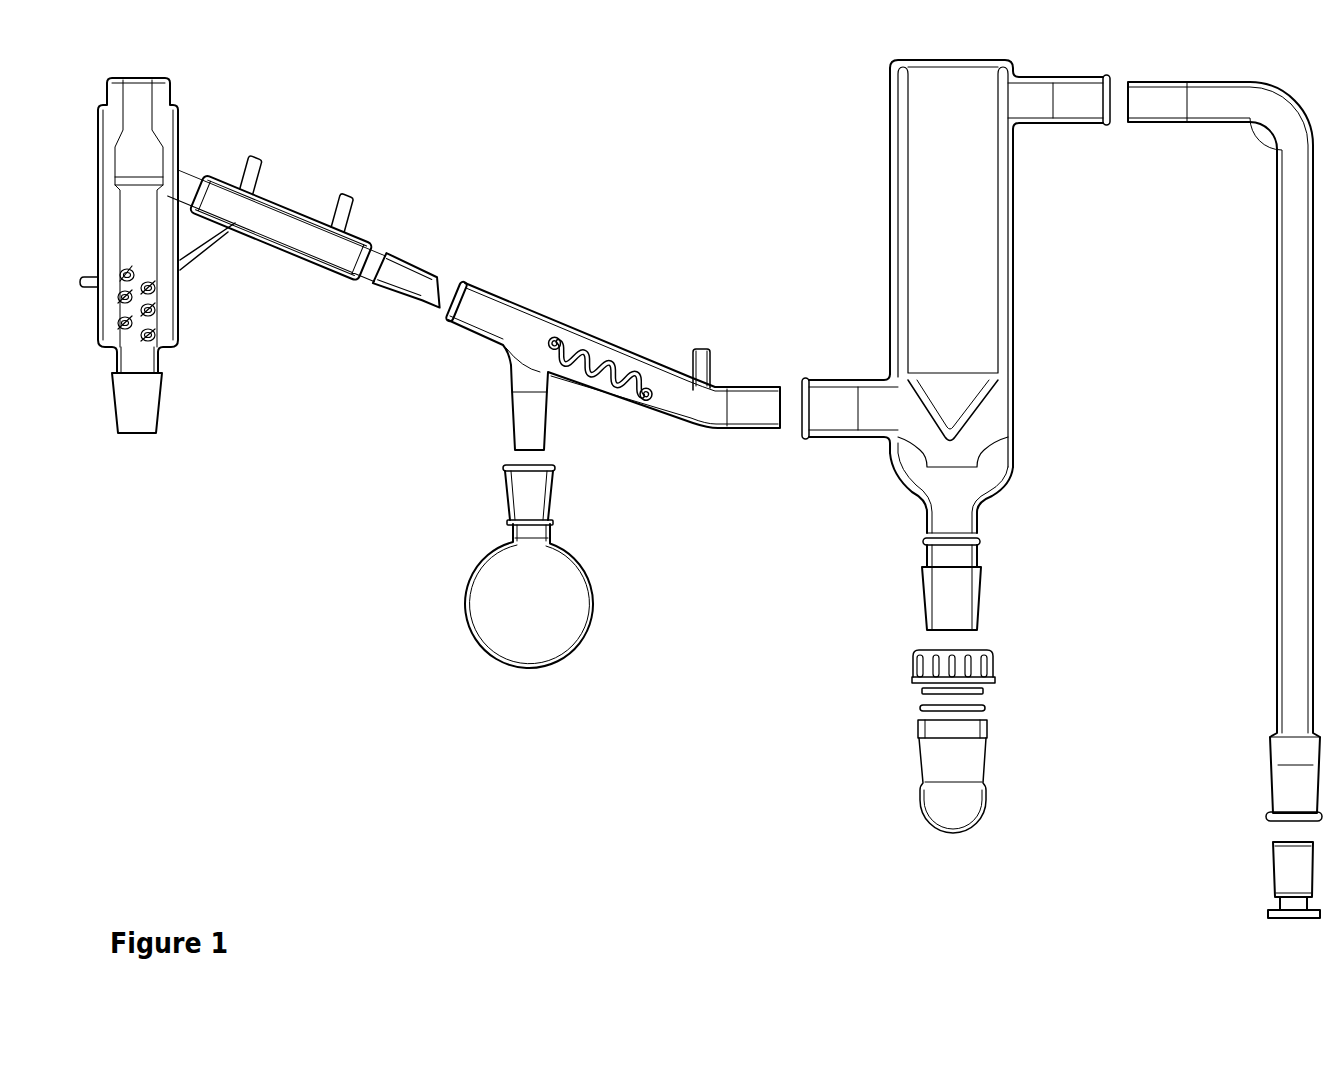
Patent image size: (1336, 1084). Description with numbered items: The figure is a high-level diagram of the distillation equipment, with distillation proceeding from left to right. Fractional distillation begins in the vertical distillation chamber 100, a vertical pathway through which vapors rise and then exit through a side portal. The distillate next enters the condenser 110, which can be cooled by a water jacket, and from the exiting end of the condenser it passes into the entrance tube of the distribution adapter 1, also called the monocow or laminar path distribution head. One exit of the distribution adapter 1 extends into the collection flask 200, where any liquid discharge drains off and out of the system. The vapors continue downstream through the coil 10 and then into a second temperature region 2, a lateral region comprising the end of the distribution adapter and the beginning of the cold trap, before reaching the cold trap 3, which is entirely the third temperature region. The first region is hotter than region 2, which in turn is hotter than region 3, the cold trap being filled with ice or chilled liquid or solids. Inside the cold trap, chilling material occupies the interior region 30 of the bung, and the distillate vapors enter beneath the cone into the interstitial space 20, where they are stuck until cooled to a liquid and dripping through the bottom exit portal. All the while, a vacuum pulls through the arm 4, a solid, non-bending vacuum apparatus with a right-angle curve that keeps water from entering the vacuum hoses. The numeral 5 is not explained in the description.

The vertical distillation chamber 100 is at (172, 115).
The condenser 110 is at (280, 217).
The distribution adapter 1 is at (545, 322).
The coil 10 is at (632, 390).
The collection flask 200 is at (572, 622).
The cold trap 3 is at (913, 218).
The interior region of the chilling bung 30 is at (927, 288).
The second temperature region 2 is at (880, 413).
The interstitial space 20 is at (980, 437).
The arm 4 is at (1278, 277).
The adapter 5 is at (1297, 867).